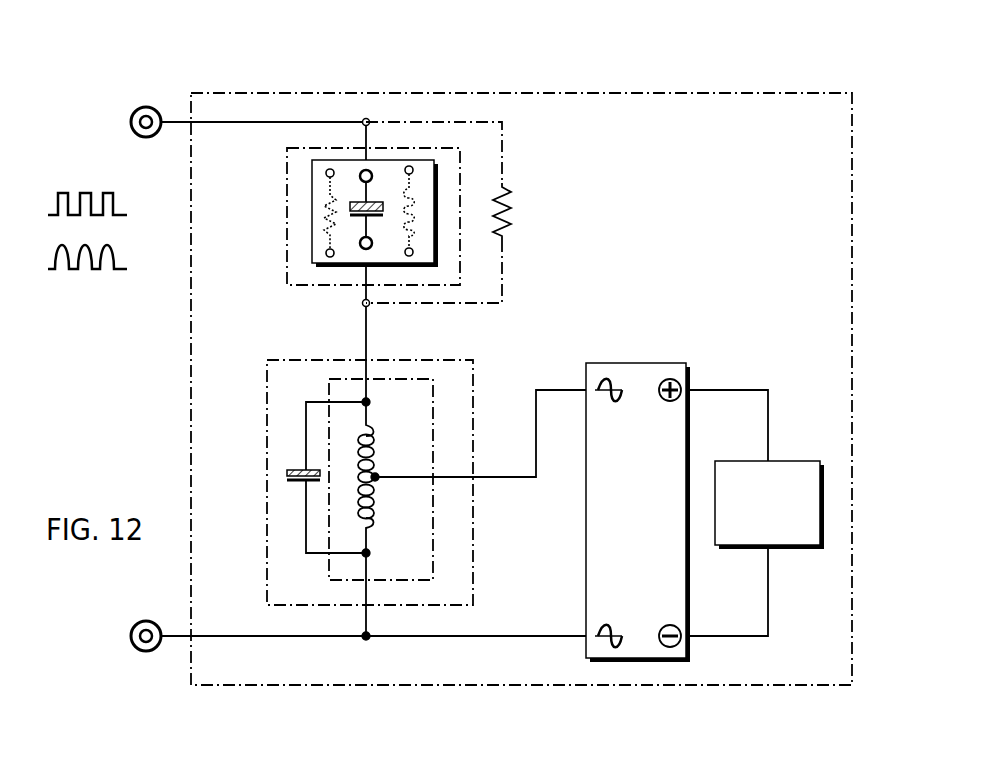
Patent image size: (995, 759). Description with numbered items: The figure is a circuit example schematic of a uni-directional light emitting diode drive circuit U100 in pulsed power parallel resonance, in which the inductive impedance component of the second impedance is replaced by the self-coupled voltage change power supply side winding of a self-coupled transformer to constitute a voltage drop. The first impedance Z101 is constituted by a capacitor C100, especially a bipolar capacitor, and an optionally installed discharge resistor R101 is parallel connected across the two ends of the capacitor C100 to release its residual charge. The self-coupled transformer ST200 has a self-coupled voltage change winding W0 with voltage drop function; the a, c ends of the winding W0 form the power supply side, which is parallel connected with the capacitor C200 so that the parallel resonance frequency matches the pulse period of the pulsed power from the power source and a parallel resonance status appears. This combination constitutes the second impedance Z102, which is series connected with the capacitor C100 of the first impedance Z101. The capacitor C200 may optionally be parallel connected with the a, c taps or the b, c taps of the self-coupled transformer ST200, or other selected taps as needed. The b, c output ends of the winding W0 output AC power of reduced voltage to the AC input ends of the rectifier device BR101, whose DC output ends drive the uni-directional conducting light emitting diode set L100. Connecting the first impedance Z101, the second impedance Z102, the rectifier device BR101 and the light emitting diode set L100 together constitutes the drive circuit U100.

The uni-directional light emitting diode drive circuit U100 is at (742, 93).
The first impedance Z101 is at (334, 234).
The capacitor C100 is at (353, 217).
The discharge resistor R101 is at (474, 212).
The second impedance Z102 is at (267, 419).
The capacitor C200 is at (287, 474).
The self-coupled voltage change winding W0 is at (377, 463).
The self-coupled transformer ST200 is at (443, 479).
The rectifier device BR101 is at (645, 362).
The uni-directional conducting light emitting diode set L100 is at (797, 461).
The a end of the self-coupled voltage change winding a is at (381, 396).
The b output end of the self-coupled voltage change winding b is at (389, 496).
The c end of the self-coupled voltage change winding c is at (381, 554).